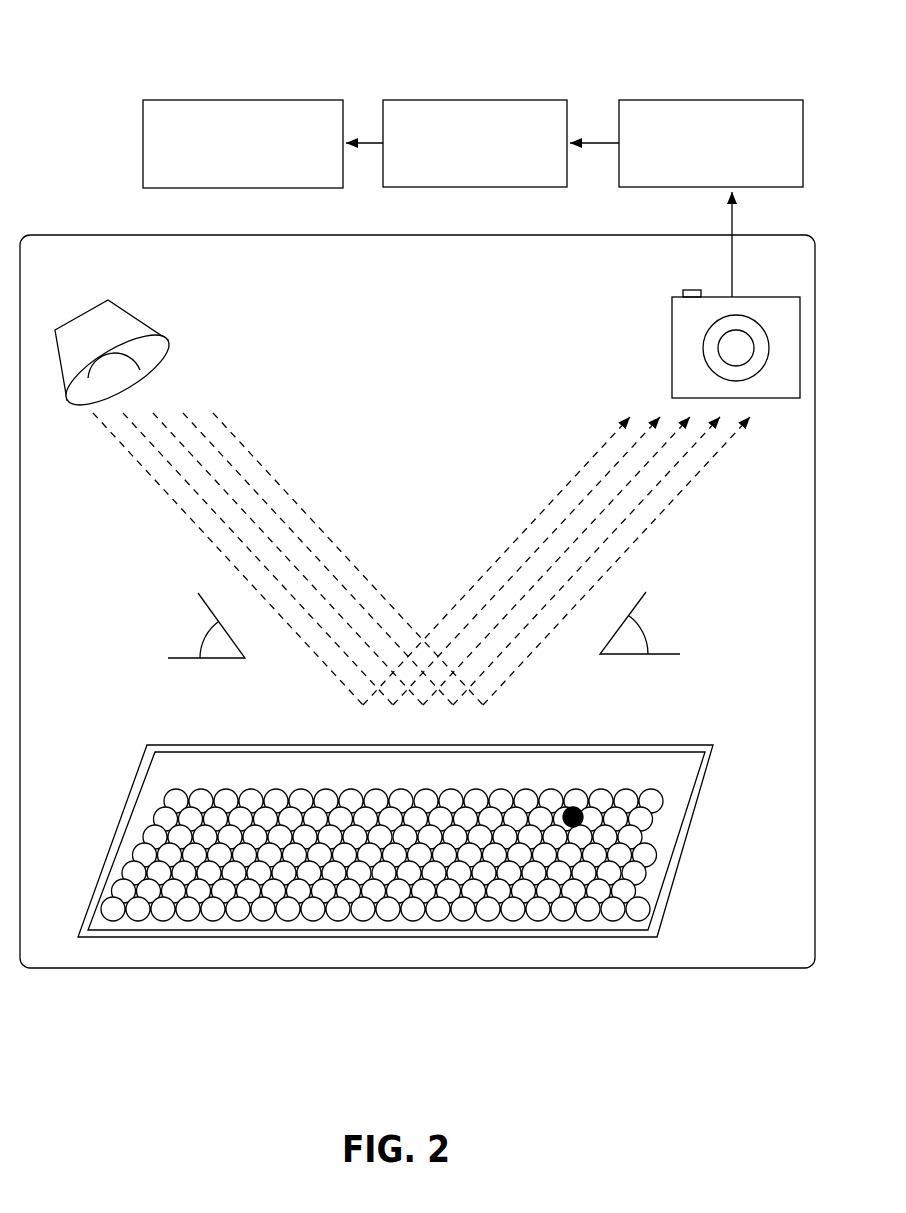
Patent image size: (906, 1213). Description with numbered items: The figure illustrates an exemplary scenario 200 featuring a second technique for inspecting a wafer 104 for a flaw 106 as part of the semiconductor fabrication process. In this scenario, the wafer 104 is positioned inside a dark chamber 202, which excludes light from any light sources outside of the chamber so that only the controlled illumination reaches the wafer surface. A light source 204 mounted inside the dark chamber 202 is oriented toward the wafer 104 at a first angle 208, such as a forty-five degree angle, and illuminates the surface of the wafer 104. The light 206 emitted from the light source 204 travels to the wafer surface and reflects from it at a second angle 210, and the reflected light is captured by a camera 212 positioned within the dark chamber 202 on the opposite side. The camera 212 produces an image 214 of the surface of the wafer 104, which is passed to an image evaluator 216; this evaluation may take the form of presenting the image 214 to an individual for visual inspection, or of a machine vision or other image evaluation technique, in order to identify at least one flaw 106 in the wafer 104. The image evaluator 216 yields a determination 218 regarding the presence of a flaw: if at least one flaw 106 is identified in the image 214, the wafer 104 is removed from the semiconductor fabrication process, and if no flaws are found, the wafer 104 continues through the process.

The exemplary scenario 200 is at (98, 32).
The dark chamber 202 is at (90, 234).
The light source 204 is at (131, 318).
The light 206 is at (259, 460).
The first angle 208 is at (201, 640).
The second angle 210 is at (646, 612).
The camera 212 is at (672, 322).
The image 214 is at (693, 100).
The image evaluator 216 is at (456, 100).
The determination: flaw present 218 is at (216, 100).
The wafer 104 is at (196, 745).
The flaw 106 is at (584, 806).